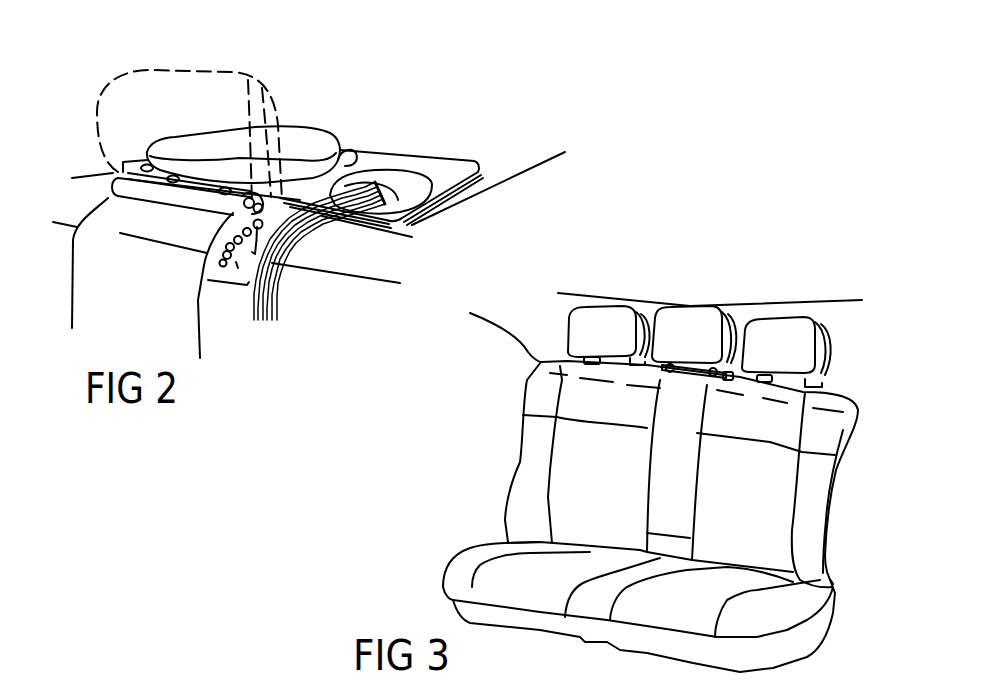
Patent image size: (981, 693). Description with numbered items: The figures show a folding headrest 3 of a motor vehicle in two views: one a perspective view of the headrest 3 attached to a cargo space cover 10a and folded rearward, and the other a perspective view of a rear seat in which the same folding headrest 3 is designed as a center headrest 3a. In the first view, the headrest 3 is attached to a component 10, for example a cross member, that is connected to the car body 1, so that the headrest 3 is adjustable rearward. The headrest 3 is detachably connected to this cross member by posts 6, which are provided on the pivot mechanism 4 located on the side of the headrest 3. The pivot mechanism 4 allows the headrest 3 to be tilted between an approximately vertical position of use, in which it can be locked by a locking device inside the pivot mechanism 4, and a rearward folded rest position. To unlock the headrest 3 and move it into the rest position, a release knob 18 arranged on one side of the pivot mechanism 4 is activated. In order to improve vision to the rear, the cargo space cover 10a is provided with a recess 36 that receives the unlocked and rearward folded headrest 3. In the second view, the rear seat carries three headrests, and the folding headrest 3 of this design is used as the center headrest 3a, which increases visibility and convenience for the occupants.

In FIG. 2, the car body 1 is at (481, 226).
In FIG. 3, the car body 1 is at (527, 322).
In FIG. 2, the headrest 3 is at (197, 147).
In FIG. 3, the center headrest 3a is at (683, 332).
In FIG. 2, the pivot mechanism 4 is at (175, 215).
In FIG. 3, the pivot mechanism 4 is at (700, 377).
In FIG. 2, the posts 6 is at (277, 203).
In FIG. 2, the component 10 is at (484, 150).
In FIG. 3, the component 10 is at (874, 358).
In FIG. 2, the cargo space cover 10a is at (432, 163).
In FIG. 2, the release knob 18 is at (214, 246).
In FIG. 2, the recess 36 is at (347, 162).